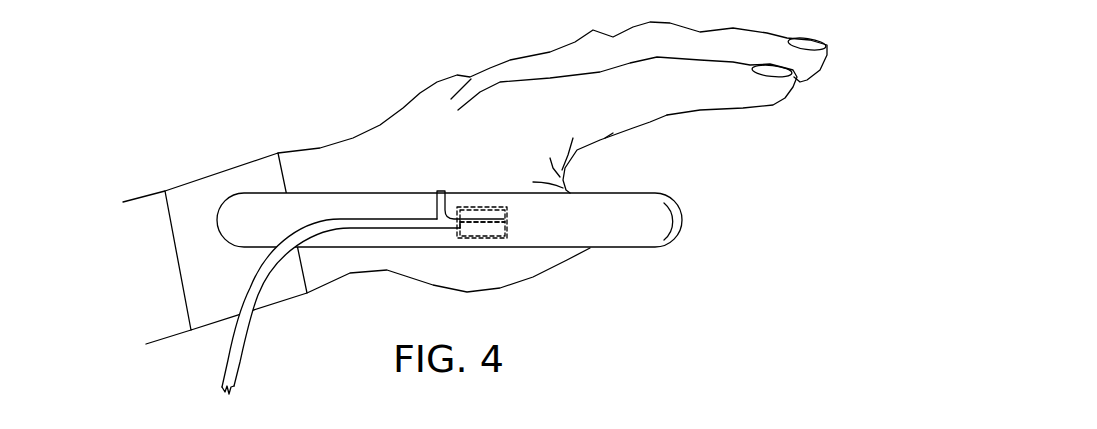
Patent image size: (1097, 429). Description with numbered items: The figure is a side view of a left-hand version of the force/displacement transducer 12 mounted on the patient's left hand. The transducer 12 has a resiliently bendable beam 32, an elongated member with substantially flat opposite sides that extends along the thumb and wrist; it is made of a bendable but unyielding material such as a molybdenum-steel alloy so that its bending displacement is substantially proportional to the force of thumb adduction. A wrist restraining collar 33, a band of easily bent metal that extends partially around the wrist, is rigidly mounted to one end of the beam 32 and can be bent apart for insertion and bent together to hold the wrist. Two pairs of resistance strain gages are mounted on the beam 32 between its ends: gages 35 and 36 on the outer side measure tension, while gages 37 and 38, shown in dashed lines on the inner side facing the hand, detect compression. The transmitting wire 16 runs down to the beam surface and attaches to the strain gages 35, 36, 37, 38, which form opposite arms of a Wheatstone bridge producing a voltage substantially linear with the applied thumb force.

The force/displacement transducer 12 is at (612, 188).
The transmitting wire 16 is at (231, 340).
The resiliently bendable beam 32 is at (375, 193).
The wrist restraining collar 33 is at (227, 170).
The strain gage 35 is at (485, 205).
The strain gage 36 is at (455, 228).
The strain gage 37 is at (508, 210).
The strain gage 38 is at (508, 235).